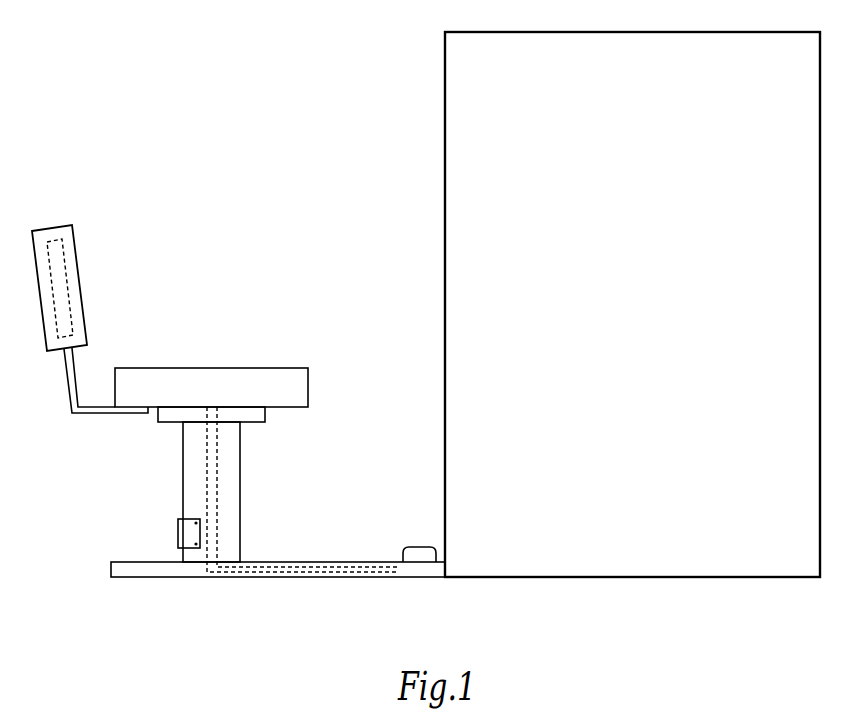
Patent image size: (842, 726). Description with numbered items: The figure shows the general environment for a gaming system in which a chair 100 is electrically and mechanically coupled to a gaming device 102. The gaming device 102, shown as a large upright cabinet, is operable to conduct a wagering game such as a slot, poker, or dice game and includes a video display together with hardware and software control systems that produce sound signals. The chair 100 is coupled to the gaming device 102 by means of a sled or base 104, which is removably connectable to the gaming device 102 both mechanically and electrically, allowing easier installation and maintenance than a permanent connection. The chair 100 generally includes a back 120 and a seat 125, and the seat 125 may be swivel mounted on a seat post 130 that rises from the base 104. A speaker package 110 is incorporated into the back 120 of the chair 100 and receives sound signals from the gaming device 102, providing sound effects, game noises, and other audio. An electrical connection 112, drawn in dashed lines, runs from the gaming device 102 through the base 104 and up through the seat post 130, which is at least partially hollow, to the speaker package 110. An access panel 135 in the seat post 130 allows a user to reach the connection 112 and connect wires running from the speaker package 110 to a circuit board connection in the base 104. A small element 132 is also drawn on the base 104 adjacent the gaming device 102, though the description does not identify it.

The chair 100 is at (233, 280).
The gaming device 102 is at (445, 99).
The base 104 is at (307, 578).
The speaker package 110 is at (70, 299).
The electrical connection 112 is at (218, 516).
The back 120 is at (80, 266).
The seat 125 is at (309, 386).
The seat post 130 is at (241, 480).
The foot switch 132 is at (420, 546).
The access panel 135 is at (178, 531).